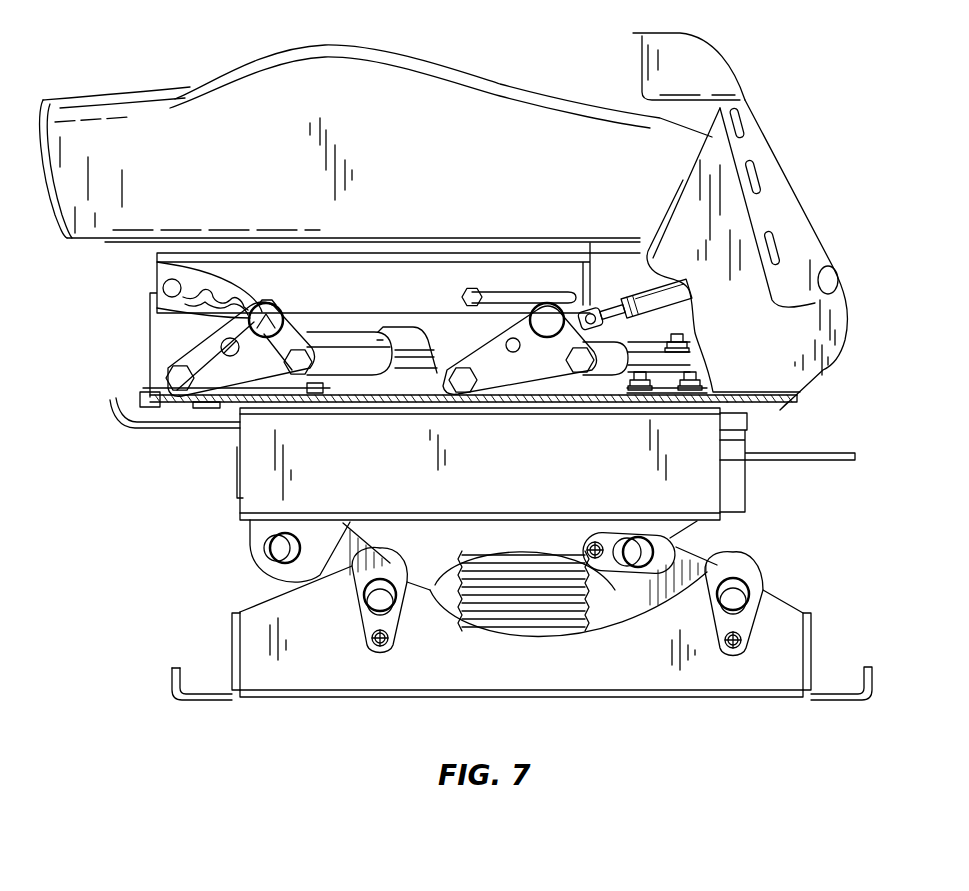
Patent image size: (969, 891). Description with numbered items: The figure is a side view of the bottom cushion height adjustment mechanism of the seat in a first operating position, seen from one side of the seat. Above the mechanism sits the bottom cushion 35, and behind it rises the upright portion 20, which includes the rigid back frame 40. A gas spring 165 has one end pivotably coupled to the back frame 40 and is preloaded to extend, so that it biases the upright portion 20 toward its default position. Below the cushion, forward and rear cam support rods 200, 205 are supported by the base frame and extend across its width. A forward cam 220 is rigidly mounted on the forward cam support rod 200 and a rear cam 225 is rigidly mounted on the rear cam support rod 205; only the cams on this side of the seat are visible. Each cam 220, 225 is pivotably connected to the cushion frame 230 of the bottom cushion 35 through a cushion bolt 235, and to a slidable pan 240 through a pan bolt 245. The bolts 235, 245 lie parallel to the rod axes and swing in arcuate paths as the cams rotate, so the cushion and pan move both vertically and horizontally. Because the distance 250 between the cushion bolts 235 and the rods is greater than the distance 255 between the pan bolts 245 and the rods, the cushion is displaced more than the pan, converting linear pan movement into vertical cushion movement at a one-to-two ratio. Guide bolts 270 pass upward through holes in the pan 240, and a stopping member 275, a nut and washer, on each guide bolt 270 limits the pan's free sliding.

The upright portion 20 is at (683, 55).
The bottom cushion 35 is at (392, 114).
The back frame 40 is at (803, 233).
The gas spring 165 is at (651, 297).
The forward cam support rod 200 is at (160, 270).
The rear cam support rod 205 is at (545, 318).
The forward cam 220 is at (215, 380).
The rear cam 225 is at (510, 383).
The cushion frame 230 is at (260, 272).
The cushion bolt 235 is at (160, 373).
The pan 240 is at (352, 368).
The pan bolt 245 is at (297, 372).
The distance between cushion bolts and cam support rods 250 is at (155, 348).
The distance between pan bolts and cam support rods 255 is at (385, 323).
The guide bolt 270 is at (692, 362).
The stopping member 275 is at (688, 346).